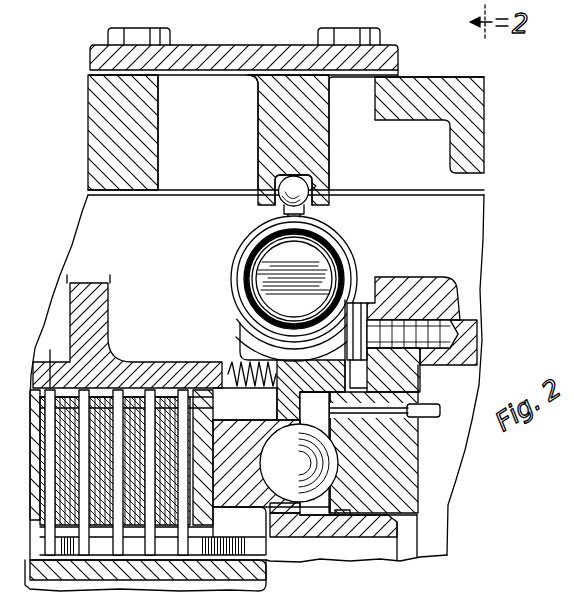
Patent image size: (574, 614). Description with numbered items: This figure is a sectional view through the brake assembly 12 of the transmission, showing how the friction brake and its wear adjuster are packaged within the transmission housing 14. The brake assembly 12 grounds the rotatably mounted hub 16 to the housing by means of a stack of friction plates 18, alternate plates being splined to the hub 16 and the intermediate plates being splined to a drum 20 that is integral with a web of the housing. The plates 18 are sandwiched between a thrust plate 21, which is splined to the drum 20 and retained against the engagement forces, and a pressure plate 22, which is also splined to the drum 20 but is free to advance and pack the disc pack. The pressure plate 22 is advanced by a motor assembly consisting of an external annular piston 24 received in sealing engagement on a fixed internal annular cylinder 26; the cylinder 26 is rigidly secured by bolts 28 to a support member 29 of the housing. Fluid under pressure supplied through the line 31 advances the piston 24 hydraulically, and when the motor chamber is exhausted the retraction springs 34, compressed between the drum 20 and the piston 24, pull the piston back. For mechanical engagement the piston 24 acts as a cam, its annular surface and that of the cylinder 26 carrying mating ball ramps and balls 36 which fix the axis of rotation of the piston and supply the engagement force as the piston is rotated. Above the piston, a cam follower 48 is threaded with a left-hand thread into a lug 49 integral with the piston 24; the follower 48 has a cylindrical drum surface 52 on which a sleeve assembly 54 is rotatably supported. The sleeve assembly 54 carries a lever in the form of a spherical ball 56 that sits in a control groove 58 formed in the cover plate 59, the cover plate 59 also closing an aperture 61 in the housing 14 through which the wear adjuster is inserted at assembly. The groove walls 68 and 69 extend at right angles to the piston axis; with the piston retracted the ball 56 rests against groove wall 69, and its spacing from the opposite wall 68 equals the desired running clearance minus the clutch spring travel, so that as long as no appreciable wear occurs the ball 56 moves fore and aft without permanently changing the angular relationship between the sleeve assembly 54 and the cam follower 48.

The brake assembly 12 is at (191, 355).
The transmission housing 14 is at (95, 91).
The hub 16 is at (264, 570).
The friction plates 18 is at (155, 395).
The drum 20 is at (125, 362).
The thrust plate 21 is at (50, 362).
The pressure plate 22 is at (214, 520).
The piston 24 is at (314, 528).
The cylinder 26 is at (416, 474).
The bolts 28 is at (356, 306).
The support member 29 is at (421, 280).
The line 31 is at (440, 408).
The retraction springs 34 is at (228, 362).
The ball ramps and balls 36 is at (283, 430).
The cam follower 48 is at (257, 264).
The lug 49 is at (331, 238).
The cylindrical drum surface 52 is at (332, 512).
The sleeve assembly 54 is at (234, 259).
The ball 56 is at (283, 206).
The control groove 58 is at (294, 177).
The cover plate 59 is at (256, 45).
The aperture 61 is at (158, 134).
The groove wall 68 is at (275, 197).
The groove wall 69 is at (314, 185).